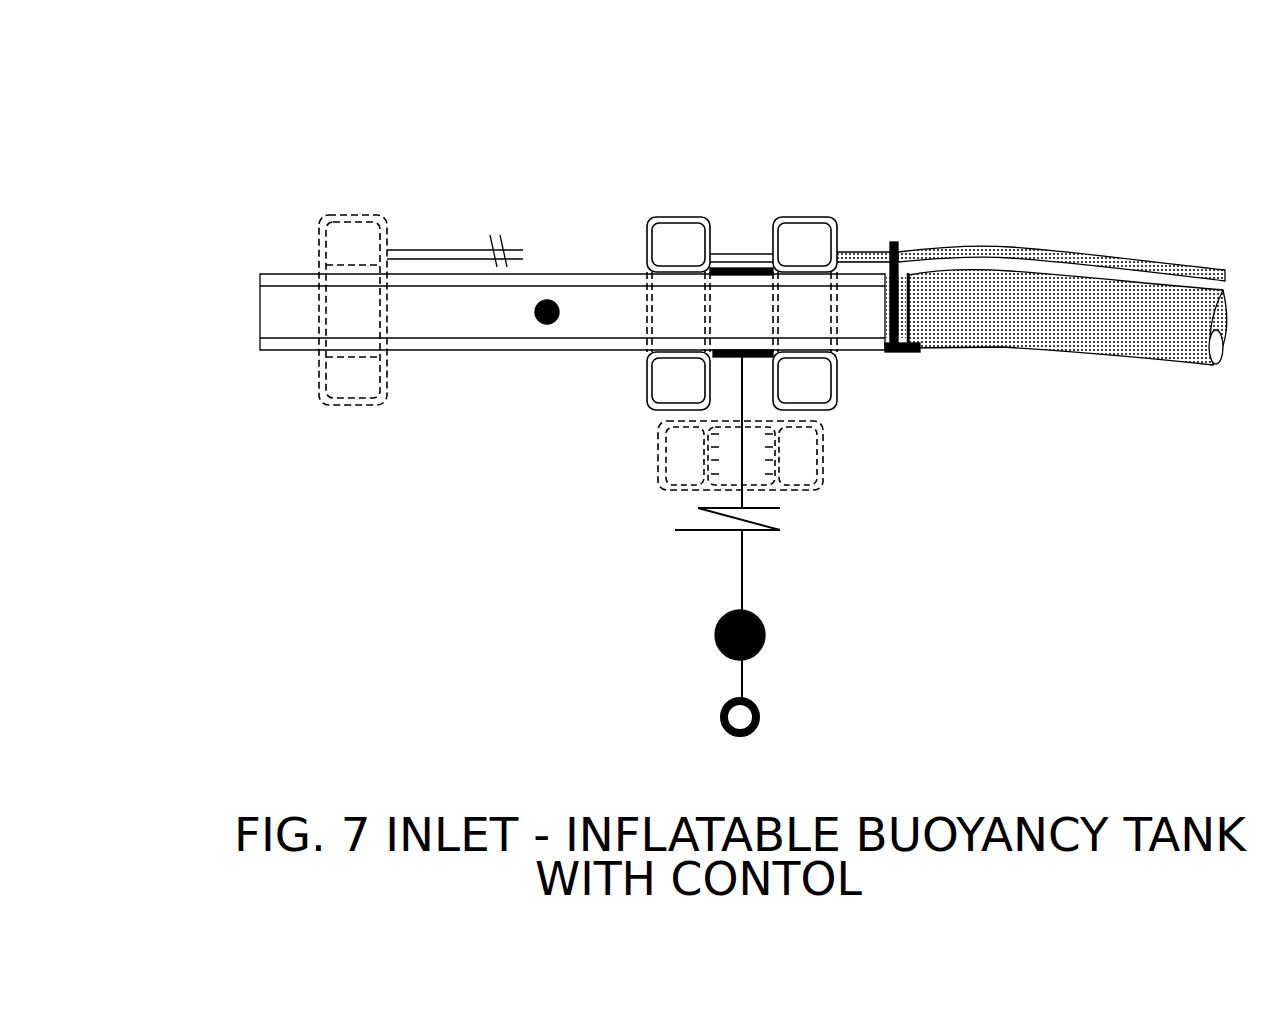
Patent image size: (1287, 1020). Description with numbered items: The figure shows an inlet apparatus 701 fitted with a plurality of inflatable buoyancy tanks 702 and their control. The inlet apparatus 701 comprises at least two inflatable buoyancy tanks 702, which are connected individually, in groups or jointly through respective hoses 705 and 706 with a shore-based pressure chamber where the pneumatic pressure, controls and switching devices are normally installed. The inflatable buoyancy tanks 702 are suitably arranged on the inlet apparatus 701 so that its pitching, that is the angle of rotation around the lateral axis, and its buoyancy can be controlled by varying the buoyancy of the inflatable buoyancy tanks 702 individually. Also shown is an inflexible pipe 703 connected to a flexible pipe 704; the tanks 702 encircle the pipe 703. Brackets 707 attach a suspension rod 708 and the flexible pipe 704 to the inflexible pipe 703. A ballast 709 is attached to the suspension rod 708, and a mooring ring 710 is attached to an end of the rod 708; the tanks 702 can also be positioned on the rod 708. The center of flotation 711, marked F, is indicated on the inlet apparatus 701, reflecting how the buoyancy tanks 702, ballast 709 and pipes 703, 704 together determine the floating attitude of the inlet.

The inlet apparatus 701 is at (518, 94).
The inflatable buoyancy tanks 702 is at (392, 204).
The inflexible pipe 703 is at (247, 288).
The flexible pipe 704 is at (995, 350).
The hose 705 is at (995, 248).
The hose 706 is at (441, 233).
The brackets 707 is at (733, 274).
The suspension rod 708 is at (740, 572).
The ballast 709 is at (718, 648).
The mooring ring 710 is at (720, 728).
The center of flotation 711 is at (547, 325).